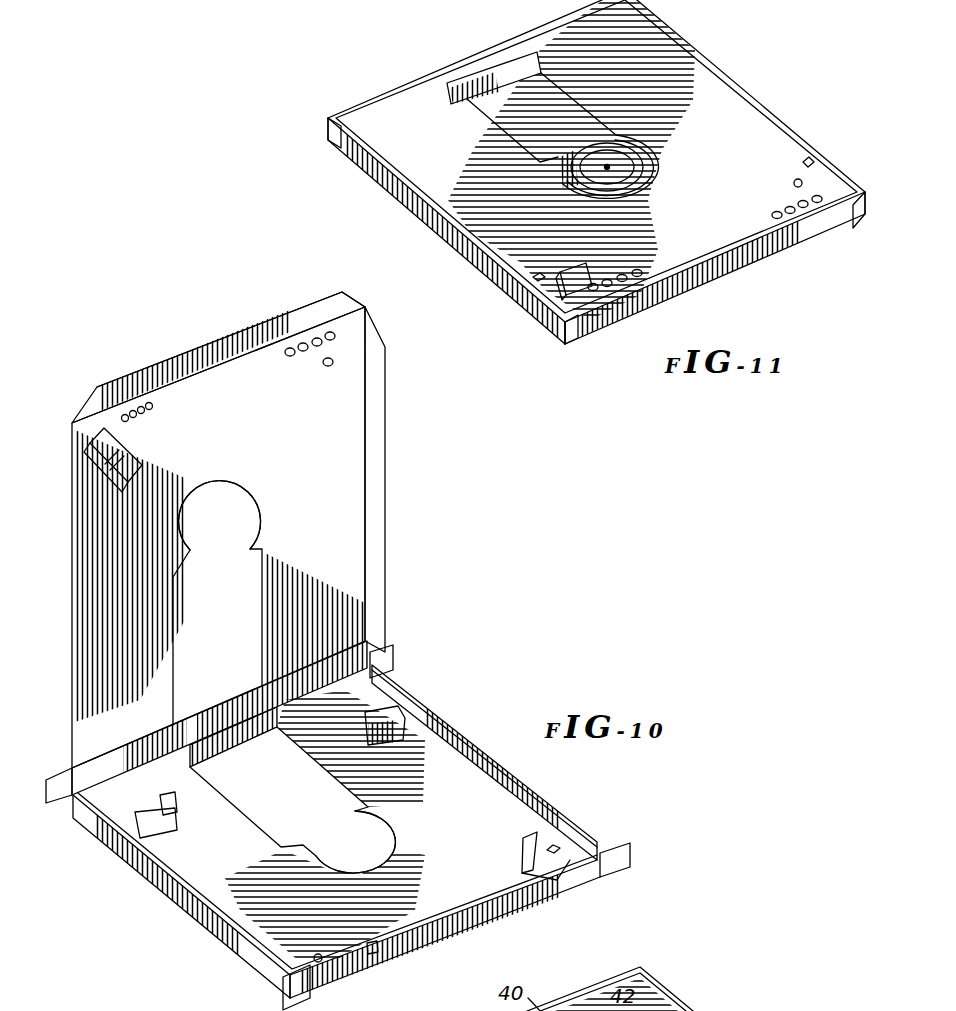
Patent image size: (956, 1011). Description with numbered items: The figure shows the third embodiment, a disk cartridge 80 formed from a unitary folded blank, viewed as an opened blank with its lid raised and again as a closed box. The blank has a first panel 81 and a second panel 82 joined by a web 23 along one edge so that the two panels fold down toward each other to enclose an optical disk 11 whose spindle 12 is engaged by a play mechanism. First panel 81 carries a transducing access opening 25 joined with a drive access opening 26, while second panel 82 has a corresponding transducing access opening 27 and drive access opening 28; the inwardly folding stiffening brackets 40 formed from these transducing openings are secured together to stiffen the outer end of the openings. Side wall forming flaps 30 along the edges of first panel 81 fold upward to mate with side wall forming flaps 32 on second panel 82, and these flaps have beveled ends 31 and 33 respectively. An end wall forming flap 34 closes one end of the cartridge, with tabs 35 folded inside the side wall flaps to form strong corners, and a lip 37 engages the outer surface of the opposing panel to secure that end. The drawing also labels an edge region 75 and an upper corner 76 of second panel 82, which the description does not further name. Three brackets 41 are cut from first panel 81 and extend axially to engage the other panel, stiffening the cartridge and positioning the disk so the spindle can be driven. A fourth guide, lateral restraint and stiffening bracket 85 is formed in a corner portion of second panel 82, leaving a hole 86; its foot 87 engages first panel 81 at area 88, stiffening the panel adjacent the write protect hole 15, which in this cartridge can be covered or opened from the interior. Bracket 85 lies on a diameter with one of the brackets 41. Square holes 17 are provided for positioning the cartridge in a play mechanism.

In FIG. 11, the optical disk 11 is at (606, 118).
In FIG. 11, the spindle 12 is at (630, 148).
In FIG. 10, the write protect hole 15 is at (318, 955).
In FIG. 11, the square hole 17 is at (538, 275).
In FIG. 10, the square hole 17 is at (554, 853).
In FIG. 10, the web 23 is at (155, 740).
In FIG. 10, the transducing access opening 25 is at (292, 800).
In FIG. 10, the drive access opening 26 is at (367, 855).
In FIG. 10, the transducing access opening 27 is at (217, 603).
In FIG. 10, the drive access opening 28 is at (237, 531).
In FIG. 11, the side wall forming flap 30 is at (560, 335).
In FIG. 10, the side wall forming flap 30 is at (503, 781).
In FIG. 10, the beveled end 31 is at (593, 848).
In FIG. 11, the side wall forming flap 32 is at (449, 232).
In FIG. 10, the side wall forming flap 32 is at (250, 514).
In FIG. 10, the beveled end 33 is at (373, 330).
In FIG. 11, the end wall forming flap 34 is at (864, 212).
In FIG. 10, the end wall forming flap 34 is at (440, 912).
In FIG. 10, the tab 35 is at (283, 988).
In FIG. 11, the lip 37 is at (324, 128).
In FIG. 10, the lip 37 is at (58, 778).
In FIG. 11, the stiffening bracket 40 is at (512, 62).
In FIG. 10, the stiffening bracket 40 is at (280, 700).
In FIG. 10, the bracket 41 is at (193, 820).
In FIG. 11, the rim 75 is at (776, 240).
In FIG. 10, the rim 75 is at (300, 302).
In FIG. 10, the top edge 76 is at (358, 298).
In FIG. 11, the cartridge 80 is at (563, 180).
In FIG. 10, the cartridge 80 is at (333, 635).
In FIG. 10, the first panel 81 is at (333, 806).
In FIG. 11, the second panel 82 is at (750, 117).
In FIG. 10, the second panel 82 is at (243, 375).
In FIG. 11, the stiffening bracket 85 is at (572, 268).
In FIG. 10, the stiffening bracket 85 is at (128, 445).
In FIG. 11, the hole 86 is at (596, 283).
In FIG. 10, the hole 86 is at (128, 417).
In FIG. 10, the foot 87 is at (135, 478).
In FIG. 10, the area 88 is at (370, 946).